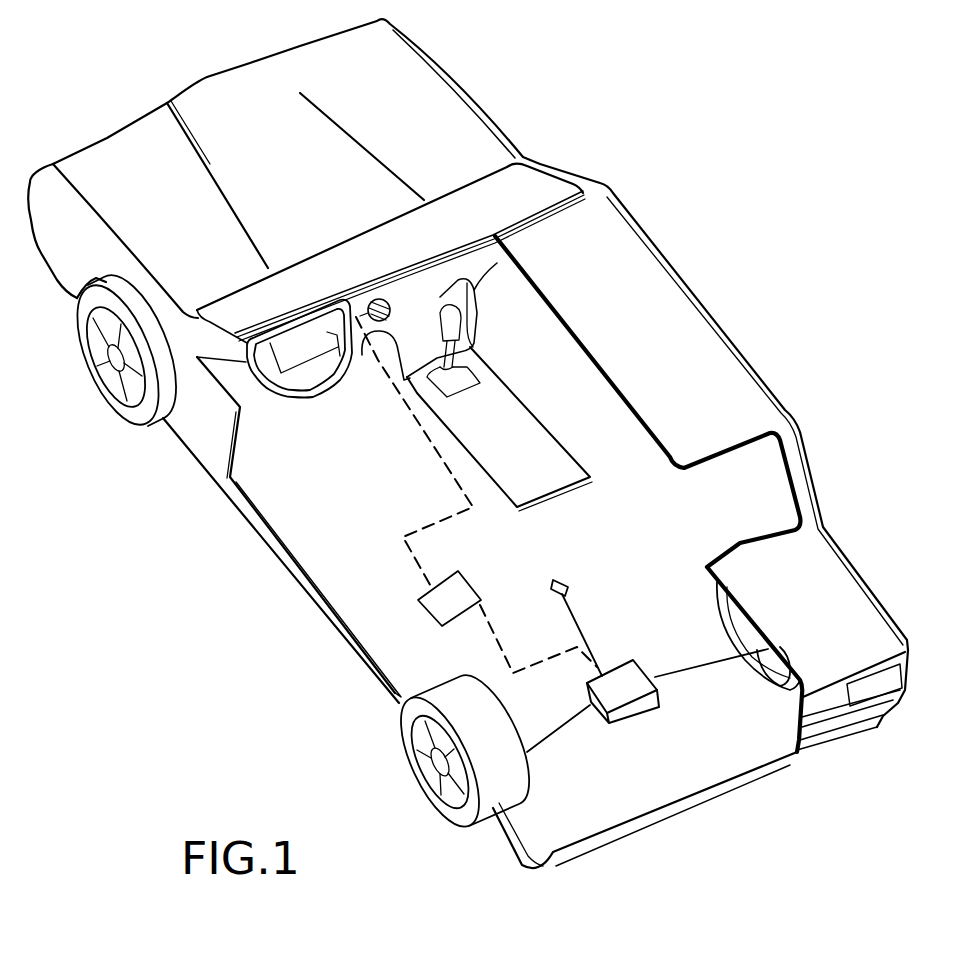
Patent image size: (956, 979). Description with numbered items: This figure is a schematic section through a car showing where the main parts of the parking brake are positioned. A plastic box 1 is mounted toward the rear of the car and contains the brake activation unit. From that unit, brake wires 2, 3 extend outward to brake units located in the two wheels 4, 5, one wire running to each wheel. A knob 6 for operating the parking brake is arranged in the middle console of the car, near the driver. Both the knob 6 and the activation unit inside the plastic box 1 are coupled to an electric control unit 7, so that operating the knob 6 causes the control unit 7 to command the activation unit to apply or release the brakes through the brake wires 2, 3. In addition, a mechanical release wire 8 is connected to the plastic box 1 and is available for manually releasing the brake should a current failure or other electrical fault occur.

The plastic box 1 is at (630, 672).
The brake wire 2 is at (566, 727).
The brake wire 3 is at (703, 667).
The wheel 4 is at (510, 783).
The wheel 5 is at (763, 673).
The knob 6 is at (390, 304).
The electric control unit 7 is at (468, 581).
The mechanical release wire 8 is at (578, 608).